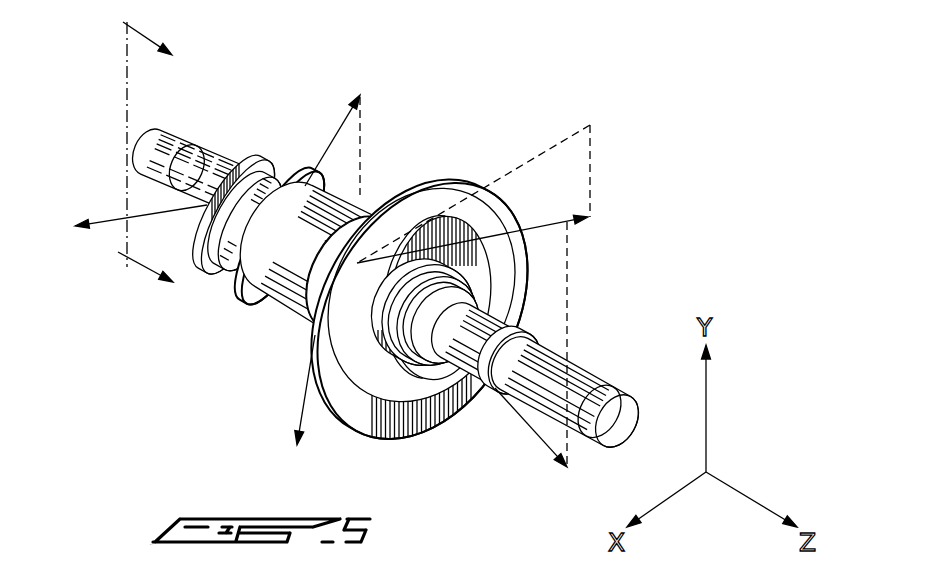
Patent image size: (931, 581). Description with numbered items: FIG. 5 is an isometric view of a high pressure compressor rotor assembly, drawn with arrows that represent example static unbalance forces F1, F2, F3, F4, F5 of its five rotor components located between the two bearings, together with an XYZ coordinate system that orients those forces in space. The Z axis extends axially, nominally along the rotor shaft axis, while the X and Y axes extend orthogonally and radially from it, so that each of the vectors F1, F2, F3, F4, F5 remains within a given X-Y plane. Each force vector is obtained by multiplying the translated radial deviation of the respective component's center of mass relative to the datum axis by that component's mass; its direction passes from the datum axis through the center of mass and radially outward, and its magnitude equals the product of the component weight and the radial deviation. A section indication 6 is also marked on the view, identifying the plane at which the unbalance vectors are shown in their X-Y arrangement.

The section line 6- 6 is at (140, 143).
The static unbalance force F1 is at (125, 224).
The static unbalance force F2 is at (340, 129).
The static unbalance force F3 is at (294, 406).
The static unbalance force F4 is at (491, 194).
The static unbalance force F5 is at (541, 363).